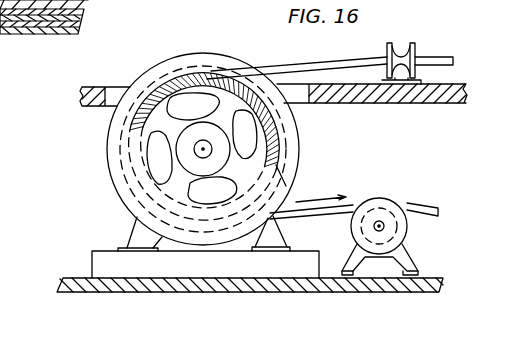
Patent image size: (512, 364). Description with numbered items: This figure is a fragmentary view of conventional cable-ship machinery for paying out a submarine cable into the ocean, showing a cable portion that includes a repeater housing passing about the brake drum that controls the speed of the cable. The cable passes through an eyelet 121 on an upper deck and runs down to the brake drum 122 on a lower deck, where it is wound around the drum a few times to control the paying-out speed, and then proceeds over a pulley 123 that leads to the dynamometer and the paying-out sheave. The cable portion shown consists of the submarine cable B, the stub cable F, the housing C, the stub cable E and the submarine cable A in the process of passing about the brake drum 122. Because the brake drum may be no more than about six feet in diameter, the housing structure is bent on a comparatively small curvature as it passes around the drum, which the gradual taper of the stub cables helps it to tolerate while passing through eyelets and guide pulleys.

The brake drum 122 is at (178, 54).
The eyelet 121 is at (388, 43).
The pulley 123 is at (384, 200).
The submarine cable A is at (281, 144).
The submarine cable B is at (433, 57).
The housing C is at (124, 134).
The stub cable E is at (133, 213).
The stub cable F is at (305, 60).